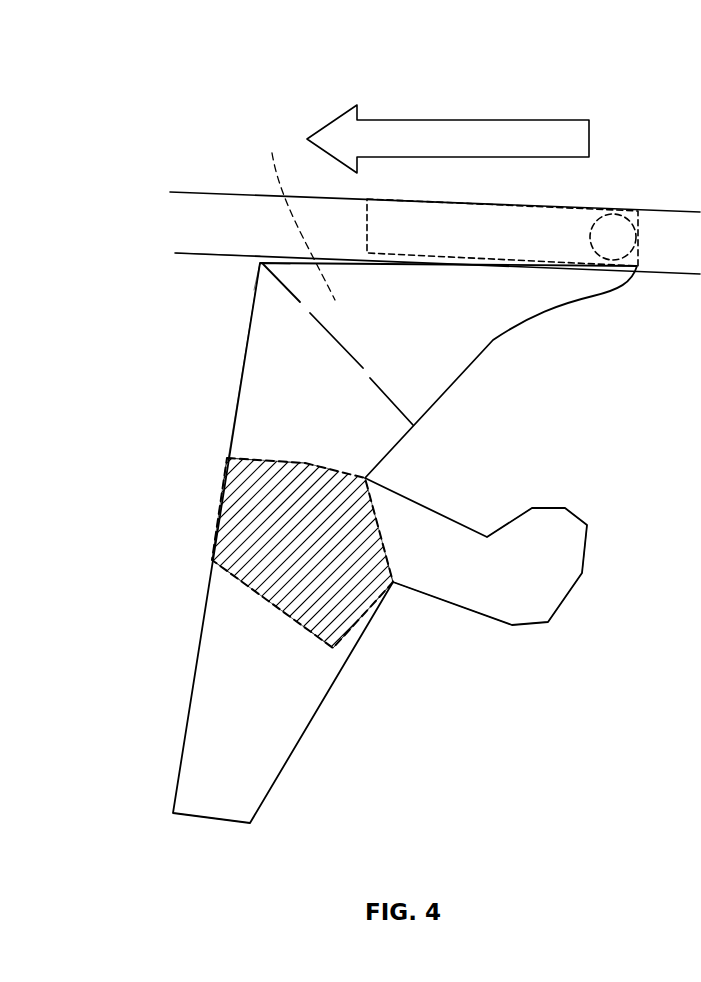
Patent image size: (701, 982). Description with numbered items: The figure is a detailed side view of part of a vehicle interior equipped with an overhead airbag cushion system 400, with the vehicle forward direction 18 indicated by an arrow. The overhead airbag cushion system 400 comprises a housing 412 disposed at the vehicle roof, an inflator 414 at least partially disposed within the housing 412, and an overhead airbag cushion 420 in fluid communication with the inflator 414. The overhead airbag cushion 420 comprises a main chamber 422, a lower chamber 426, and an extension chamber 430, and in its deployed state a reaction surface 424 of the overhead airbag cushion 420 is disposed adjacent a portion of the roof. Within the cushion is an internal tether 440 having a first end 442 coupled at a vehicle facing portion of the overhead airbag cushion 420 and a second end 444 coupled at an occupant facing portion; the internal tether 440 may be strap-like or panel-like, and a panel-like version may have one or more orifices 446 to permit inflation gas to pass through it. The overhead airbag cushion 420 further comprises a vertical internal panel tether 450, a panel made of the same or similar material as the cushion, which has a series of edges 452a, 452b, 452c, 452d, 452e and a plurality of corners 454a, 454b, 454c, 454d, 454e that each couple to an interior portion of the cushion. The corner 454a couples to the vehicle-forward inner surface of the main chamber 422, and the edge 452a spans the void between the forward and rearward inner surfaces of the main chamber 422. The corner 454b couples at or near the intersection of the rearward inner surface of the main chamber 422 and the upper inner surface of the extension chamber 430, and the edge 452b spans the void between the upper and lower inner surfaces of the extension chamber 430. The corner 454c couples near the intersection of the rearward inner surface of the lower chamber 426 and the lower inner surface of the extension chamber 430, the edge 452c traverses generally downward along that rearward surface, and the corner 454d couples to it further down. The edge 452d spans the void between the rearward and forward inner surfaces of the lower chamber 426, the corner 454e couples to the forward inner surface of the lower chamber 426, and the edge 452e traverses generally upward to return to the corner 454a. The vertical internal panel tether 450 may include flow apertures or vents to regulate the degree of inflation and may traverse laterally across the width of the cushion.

The vehicle forward direction 18 is at (423, 120).
The overhead airbag cushion system 400 is at (596, 190).
The housing 412 is at (520, 225).
The inflator 414 is at (612, 237).
The overhead airbag cushion 420 is at (384, 339).
The main chamber 422 is at (270, 327).
The reaction surface 424 is at (245, 253).
The lower chamber 426 is at (210, 775).
The extension chamber 430 is at (495, 598).
The internal tether 440 is at (294, 212).
The first end 442 is at (252, 277).
The second end 444 is at (418, 430).
The orifice 446 is at (378, 372).
The vertical internal panel tether 450 is at (280, 549).
The edge 452a is at (262, 595).
The edge 452b is at (228, 513).
The edge 452c is at (282, 458).
The edge 452d is at (392, 575).
The edge 452e is at (355, 640).
The corner 454a is at (222, 565).
The corner 454b is at (230, 460).
The corner 454c is at (320, 467).
The corner 454d is at (380, 600).
The corner 454e is at (333, 647).